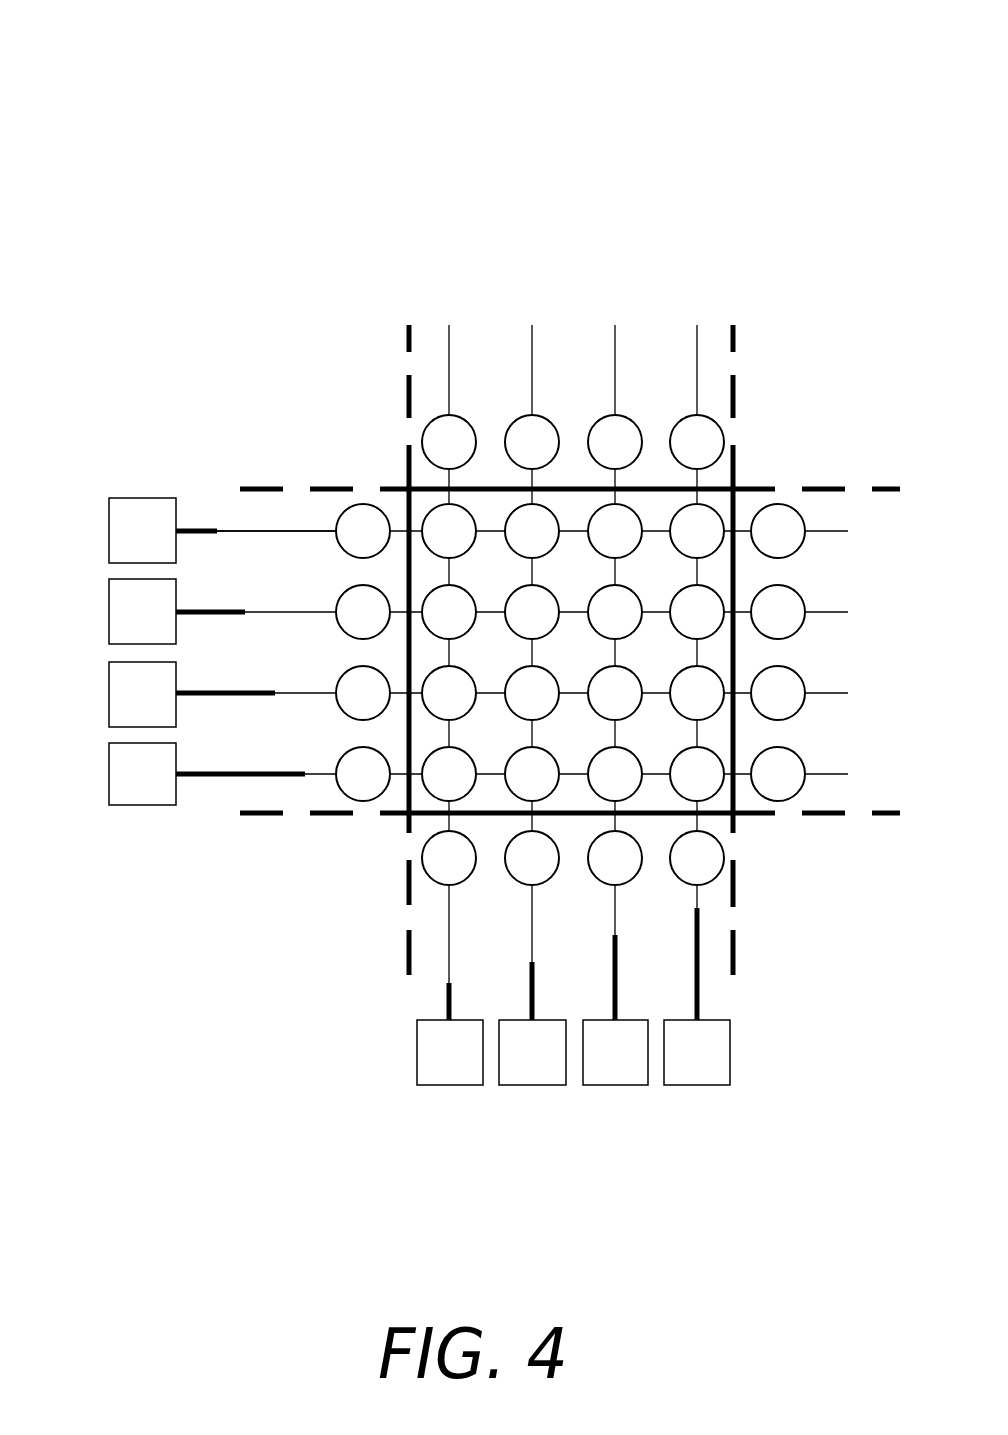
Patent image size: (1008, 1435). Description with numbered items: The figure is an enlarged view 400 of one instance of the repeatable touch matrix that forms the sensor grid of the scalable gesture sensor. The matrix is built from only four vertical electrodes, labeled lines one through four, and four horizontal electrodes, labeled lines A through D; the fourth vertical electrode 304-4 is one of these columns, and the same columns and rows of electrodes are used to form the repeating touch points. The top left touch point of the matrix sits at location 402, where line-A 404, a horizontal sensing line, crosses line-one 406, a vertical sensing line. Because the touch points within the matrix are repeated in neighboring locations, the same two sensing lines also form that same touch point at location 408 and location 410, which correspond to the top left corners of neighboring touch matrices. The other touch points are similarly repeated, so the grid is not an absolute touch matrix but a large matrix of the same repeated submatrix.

The enlarged view 400 is at (105, 40).
The vertical electrode 304-4 is at (491, 597).
The location 402 is at (423, 518).
The line-A 404 is at (240, 528).
The line-1 406 is at (448, 962).
The location 408 is at (430, 877).
The location 410 is at (783, 503).